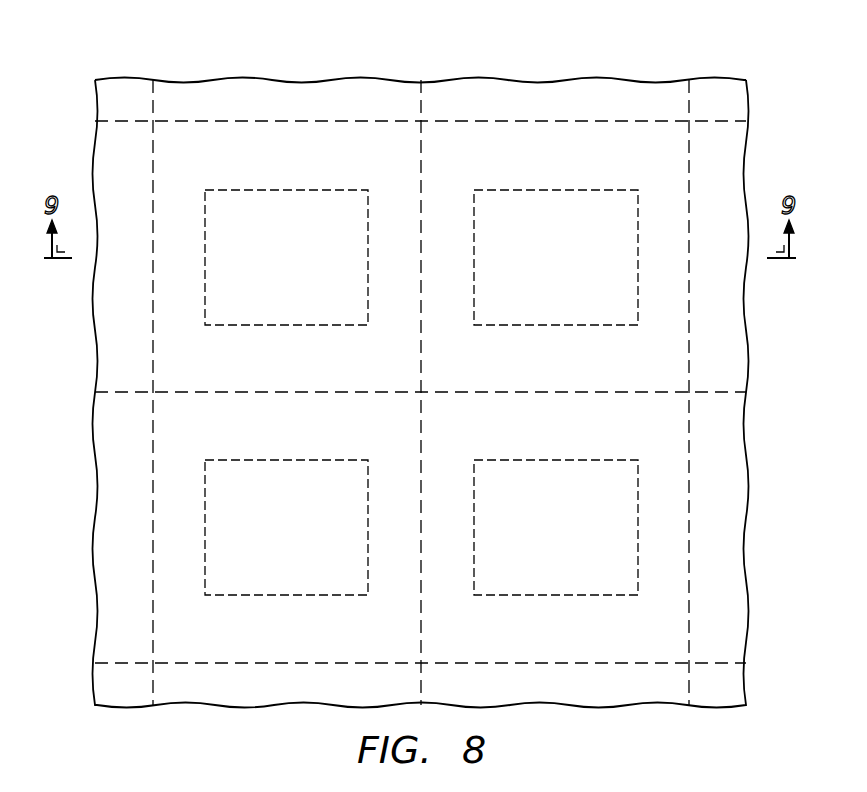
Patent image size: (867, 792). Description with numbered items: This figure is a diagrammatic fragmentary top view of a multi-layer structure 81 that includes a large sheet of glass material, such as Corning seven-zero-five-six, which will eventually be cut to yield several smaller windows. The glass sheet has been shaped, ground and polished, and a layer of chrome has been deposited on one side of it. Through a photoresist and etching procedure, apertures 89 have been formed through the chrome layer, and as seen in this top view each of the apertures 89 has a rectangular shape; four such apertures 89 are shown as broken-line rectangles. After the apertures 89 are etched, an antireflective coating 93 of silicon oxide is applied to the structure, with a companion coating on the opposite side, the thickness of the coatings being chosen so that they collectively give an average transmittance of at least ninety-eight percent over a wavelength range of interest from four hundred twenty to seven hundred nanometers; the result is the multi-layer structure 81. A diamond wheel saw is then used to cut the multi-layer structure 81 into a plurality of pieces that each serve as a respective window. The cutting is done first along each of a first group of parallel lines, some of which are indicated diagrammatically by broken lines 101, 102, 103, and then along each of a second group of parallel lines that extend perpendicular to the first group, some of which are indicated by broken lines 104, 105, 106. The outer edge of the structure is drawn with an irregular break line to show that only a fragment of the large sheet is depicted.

The multi-layer structure 81 is at (286, 66).
The antireflective coating 93 is at (641, 80).
The apertures 89 is at (634, 250).
The first-group cutting line 101 is at (155, 350).
The first-group cutting line 102 is at (423, 624).
The first-group cutting line 103 is at (688, 355).
The second-group cutting line 104 is at (291, 122).
The second-group cutting line 105 is at (553, 396).
The second-group cutting line 106 is at (270, 662).